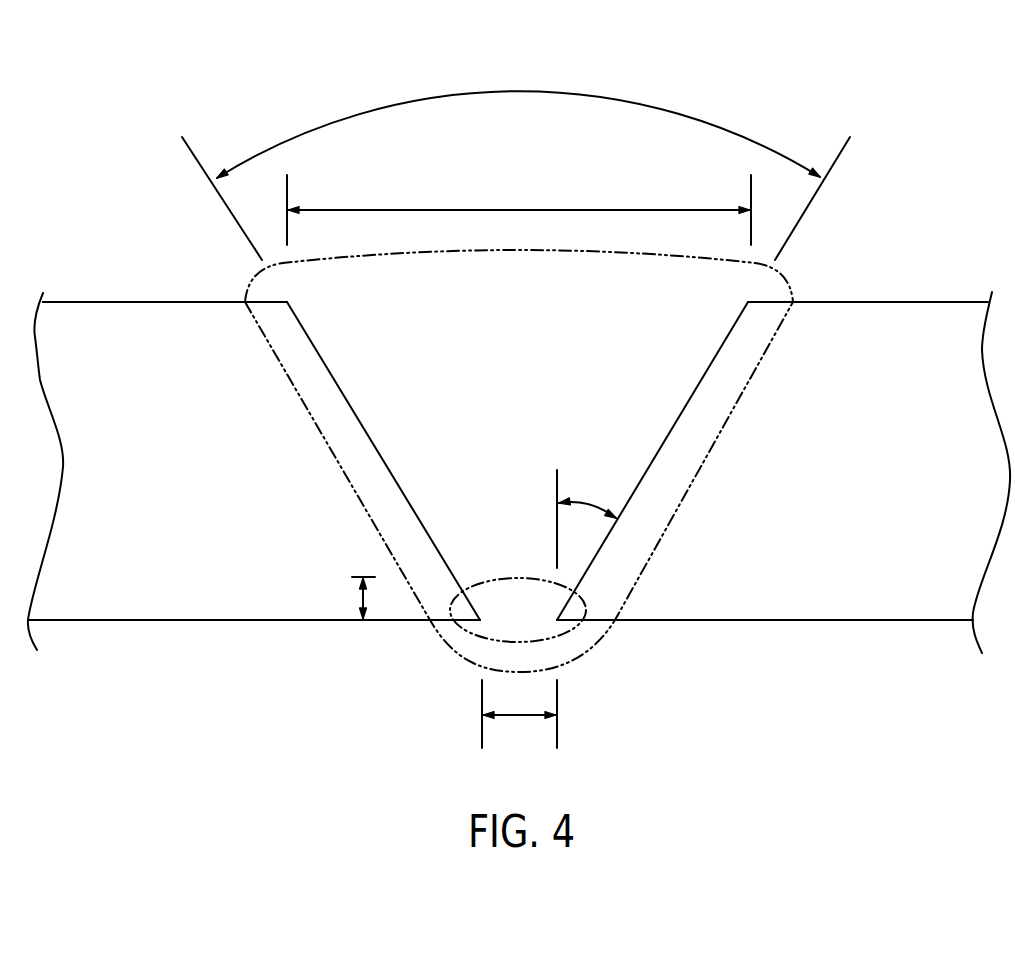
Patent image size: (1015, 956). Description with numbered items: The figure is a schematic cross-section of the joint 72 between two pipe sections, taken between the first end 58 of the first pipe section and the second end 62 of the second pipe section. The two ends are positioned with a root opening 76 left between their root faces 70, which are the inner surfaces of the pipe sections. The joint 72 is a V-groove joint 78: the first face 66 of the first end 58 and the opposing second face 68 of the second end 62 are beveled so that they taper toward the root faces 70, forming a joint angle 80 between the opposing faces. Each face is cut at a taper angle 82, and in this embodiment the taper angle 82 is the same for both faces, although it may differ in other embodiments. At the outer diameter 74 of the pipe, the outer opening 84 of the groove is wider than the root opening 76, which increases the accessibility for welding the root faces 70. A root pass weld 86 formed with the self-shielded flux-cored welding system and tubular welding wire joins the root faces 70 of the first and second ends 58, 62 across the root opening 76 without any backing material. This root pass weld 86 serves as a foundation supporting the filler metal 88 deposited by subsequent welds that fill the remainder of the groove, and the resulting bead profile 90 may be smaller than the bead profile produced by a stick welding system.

The first end 58 is at (163, 302).
The second end 62 is at (870, 302).
The first face 66 is at (383, 457).
The second face 68 is at (668, 437).
The root faces 70 is at (297, 622).
The joint 72 is at (685, 90).
The outer diameter 74 is at (202, 300).
The root opening 76 is at (515, 718).
The V-groove joint 78 is at (516, 198).
The joint angle 80 is at (517, 93).
The taper angle 82 is at (590, 505).
The outer opening 84 is at (518, 210).
The root pass weld 86 is at (553, 660).
The filler metal 88 is at (518, 252).
The bead profile 90 is at (358, 598).